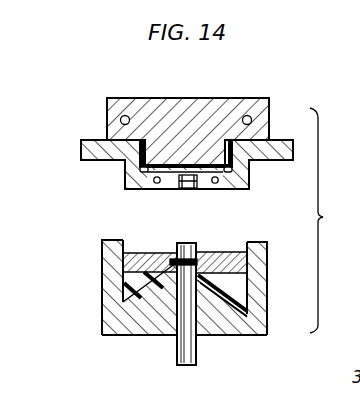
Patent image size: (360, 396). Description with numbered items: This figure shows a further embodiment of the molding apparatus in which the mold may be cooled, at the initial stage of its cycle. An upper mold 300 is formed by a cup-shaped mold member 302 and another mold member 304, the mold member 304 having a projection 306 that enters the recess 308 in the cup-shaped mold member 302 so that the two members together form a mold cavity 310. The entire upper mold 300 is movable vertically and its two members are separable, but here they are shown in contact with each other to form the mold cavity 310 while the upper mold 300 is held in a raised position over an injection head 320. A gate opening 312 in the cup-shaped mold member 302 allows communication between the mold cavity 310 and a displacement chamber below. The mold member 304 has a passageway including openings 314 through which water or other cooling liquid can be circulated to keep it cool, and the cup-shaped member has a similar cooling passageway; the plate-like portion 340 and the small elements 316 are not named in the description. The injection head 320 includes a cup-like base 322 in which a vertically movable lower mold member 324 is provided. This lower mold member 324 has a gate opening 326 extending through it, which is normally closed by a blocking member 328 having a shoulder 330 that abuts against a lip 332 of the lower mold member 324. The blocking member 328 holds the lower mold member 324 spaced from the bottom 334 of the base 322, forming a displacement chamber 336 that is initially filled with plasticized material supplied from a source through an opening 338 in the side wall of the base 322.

The upper mold 300 is at (275, 137).
The mold member 304 is at (197, 112).
The openings 314 is at (130, 114).
The plate 340 is at (95, 147).
The recess 308 is at (140, 168).
The cup-shaped mold member 302 is at (248, 170).
The mold cavity 310 is at (243, 183).
The projection 306 is at (232, 190).
The balls 316 is at (150, 190).
The gate opening 312 is at (185, 189).
The injection head 320 is at (99, 306).
The lower mold member 324 is at (125, 252).
The gate opening 326 is at (198, 252).
The cup-like base 322 is at (108, 330).
The bottom 334 is at (148, 300).
The displacement chamber 336 is at (228, 300).
The shoulder 330 is at (168, 266).
The opening 338 is at (258, 288).
The blocking member 328 is at (193, 361).
The lip 332 is at (173, 260).